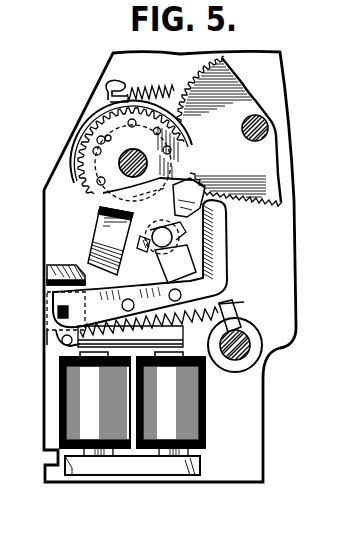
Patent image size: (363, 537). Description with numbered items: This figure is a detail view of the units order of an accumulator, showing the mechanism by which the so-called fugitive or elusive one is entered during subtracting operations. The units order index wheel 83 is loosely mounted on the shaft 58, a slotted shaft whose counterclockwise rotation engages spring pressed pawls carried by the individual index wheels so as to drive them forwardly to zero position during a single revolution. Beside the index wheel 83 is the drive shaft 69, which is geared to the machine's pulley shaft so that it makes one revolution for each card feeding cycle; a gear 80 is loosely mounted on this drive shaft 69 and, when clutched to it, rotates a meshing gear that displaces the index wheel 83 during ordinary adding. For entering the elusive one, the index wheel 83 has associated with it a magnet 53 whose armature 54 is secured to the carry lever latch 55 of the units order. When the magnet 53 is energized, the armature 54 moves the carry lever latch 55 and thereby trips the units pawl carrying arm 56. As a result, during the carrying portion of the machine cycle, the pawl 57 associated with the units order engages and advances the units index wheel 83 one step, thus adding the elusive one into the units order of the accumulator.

The magnet 53 is at (180, 406).
The armature 54 is at (222, 316).
The carry lever latch 55 is at (213, 263).
The pawl carrying arm 56 is at (100, 213).
The pawl 57 is at (205, 190).
The shaft 58 is at (128, 162).
The drive shaft 69 is at (270, 125).
The gear 80 is at (232, 86).
The index wheel 83 is at (80, 134).